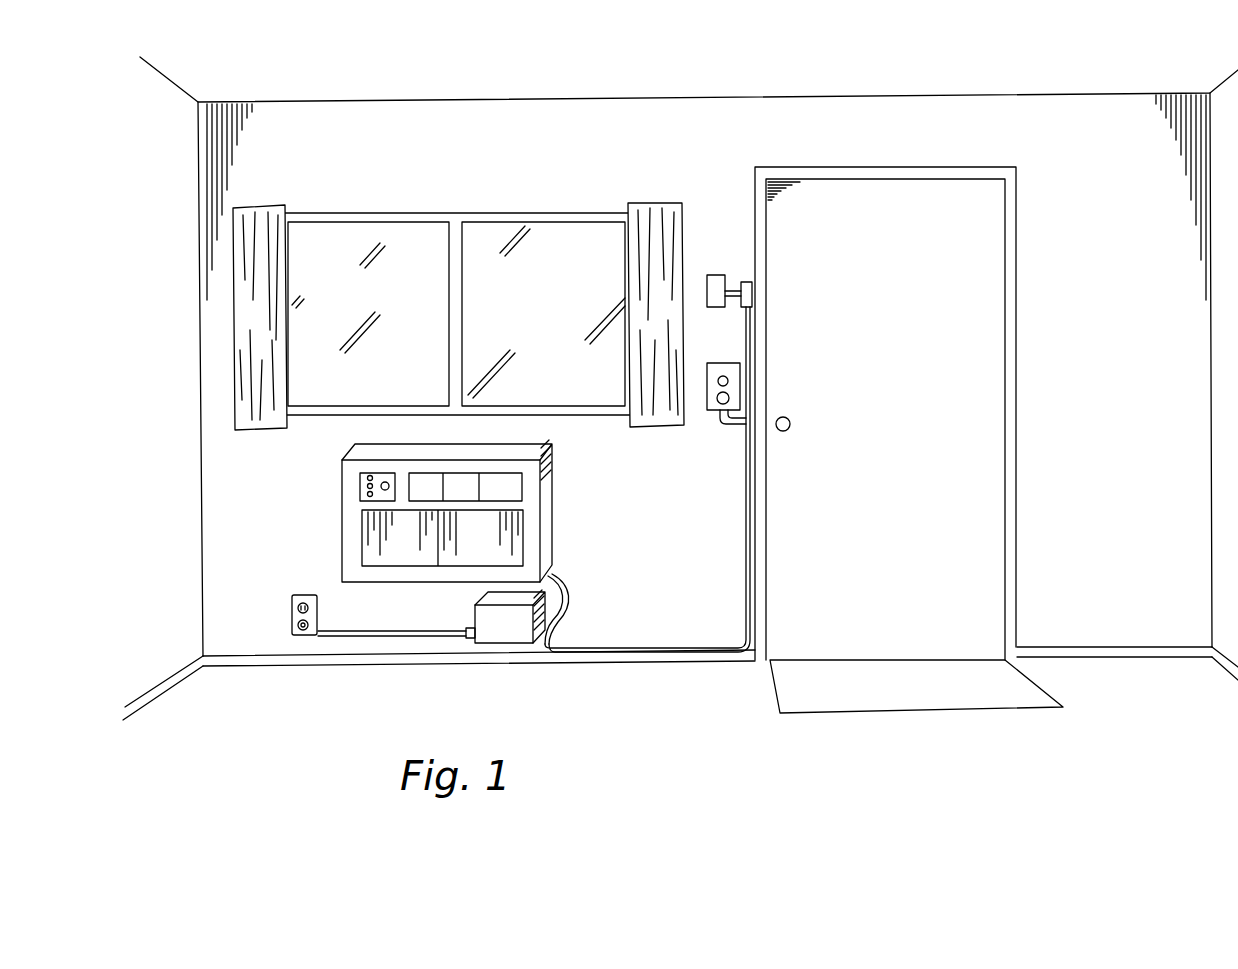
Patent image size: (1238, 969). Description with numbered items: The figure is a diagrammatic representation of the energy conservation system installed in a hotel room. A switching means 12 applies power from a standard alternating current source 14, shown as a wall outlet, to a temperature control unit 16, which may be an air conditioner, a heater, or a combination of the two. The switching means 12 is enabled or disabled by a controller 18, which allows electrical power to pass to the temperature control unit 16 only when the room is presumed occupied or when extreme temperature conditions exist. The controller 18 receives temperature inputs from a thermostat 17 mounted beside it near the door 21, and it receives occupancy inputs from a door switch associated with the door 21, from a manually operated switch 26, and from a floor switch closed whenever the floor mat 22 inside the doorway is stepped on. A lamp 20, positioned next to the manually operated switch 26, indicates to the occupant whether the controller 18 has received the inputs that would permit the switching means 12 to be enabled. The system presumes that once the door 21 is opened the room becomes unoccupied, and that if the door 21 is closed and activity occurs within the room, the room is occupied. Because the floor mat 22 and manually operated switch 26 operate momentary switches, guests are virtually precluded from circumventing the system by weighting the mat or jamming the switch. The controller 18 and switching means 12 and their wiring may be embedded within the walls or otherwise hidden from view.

The switching means 12 is at (503, 635).
The alternating current source 14 is at (299, 630).
The temperature control unit 16 is at (548, 517).
The thermostat 17 is at (718, 284).
The controller 18 is at (748, 293).
The lamp 20 is at (730, 397).
The door 21 is at (965, 196).
The floor mat 22 is at (797, 692).
The manually operated switch 26 is at (728, 380).